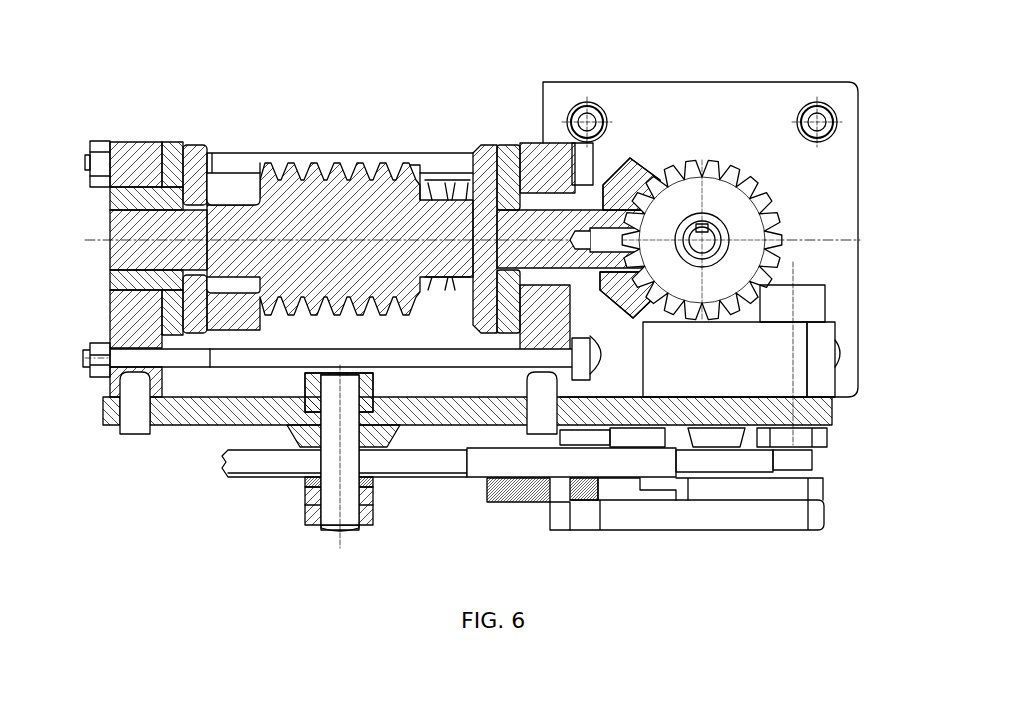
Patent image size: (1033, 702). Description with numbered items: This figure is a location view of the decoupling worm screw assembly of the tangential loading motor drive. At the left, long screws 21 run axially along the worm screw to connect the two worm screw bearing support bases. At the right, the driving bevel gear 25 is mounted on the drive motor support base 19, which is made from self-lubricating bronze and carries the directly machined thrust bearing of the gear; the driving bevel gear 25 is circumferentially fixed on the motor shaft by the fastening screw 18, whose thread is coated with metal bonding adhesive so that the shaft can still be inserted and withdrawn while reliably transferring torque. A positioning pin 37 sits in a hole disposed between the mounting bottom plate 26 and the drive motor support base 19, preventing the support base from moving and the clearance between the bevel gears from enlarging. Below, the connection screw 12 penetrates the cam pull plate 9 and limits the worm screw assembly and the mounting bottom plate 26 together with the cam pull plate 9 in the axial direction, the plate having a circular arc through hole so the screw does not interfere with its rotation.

The cam pull plate 9 is at (608, 462).
The connection screw 12 is at (347, 469).
The fastening screw 18 is at (768, 203).
The drive motor support base 19 is at (835, 216).
The long screws 21 is at (232, 158).
The driving bevel gear 25 is at (718, 182).
The mounting bottom plate 26 is at (815, 413).
The positioning pin 37 is at (545, 403).